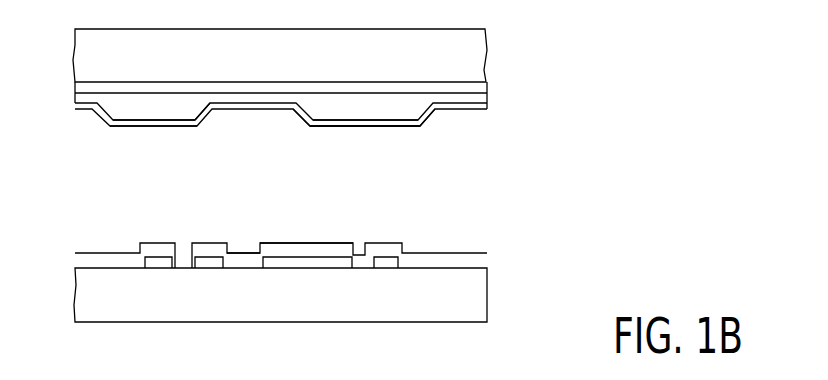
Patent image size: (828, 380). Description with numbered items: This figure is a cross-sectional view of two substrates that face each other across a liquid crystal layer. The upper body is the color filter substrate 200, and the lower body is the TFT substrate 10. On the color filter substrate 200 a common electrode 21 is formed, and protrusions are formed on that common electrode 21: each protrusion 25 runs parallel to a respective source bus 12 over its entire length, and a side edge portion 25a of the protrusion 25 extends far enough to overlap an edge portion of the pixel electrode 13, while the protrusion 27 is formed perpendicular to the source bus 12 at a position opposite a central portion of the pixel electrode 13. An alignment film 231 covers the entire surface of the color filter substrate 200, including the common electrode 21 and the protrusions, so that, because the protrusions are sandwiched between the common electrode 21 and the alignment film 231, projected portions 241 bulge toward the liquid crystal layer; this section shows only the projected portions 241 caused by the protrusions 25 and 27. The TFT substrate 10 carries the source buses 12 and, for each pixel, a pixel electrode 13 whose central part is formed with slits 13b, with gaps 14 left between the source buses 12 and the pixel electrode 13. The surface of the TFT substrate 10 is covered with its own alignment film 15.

The color filter substrate 200 is at (343, 117).
The common electrode 21 is at (485, 90).
The alignment film 231 is at (470, 112).
The protrusion 27 is at (327, 127).
The protrusion 25 is at (143, 108).
The side edge portion 25a is at (203, 126).
The projected portion 241 is at (140, 129).
The TFT substrate 10 is at (497, 252).
The gap 14 is at (182, 268).
The slit 13b is at (243, 253).
The alignment film 15 is at (303, 244).
The source bus 12 is at (157, 268).
The pixel electrode 13 is at (210, 268).